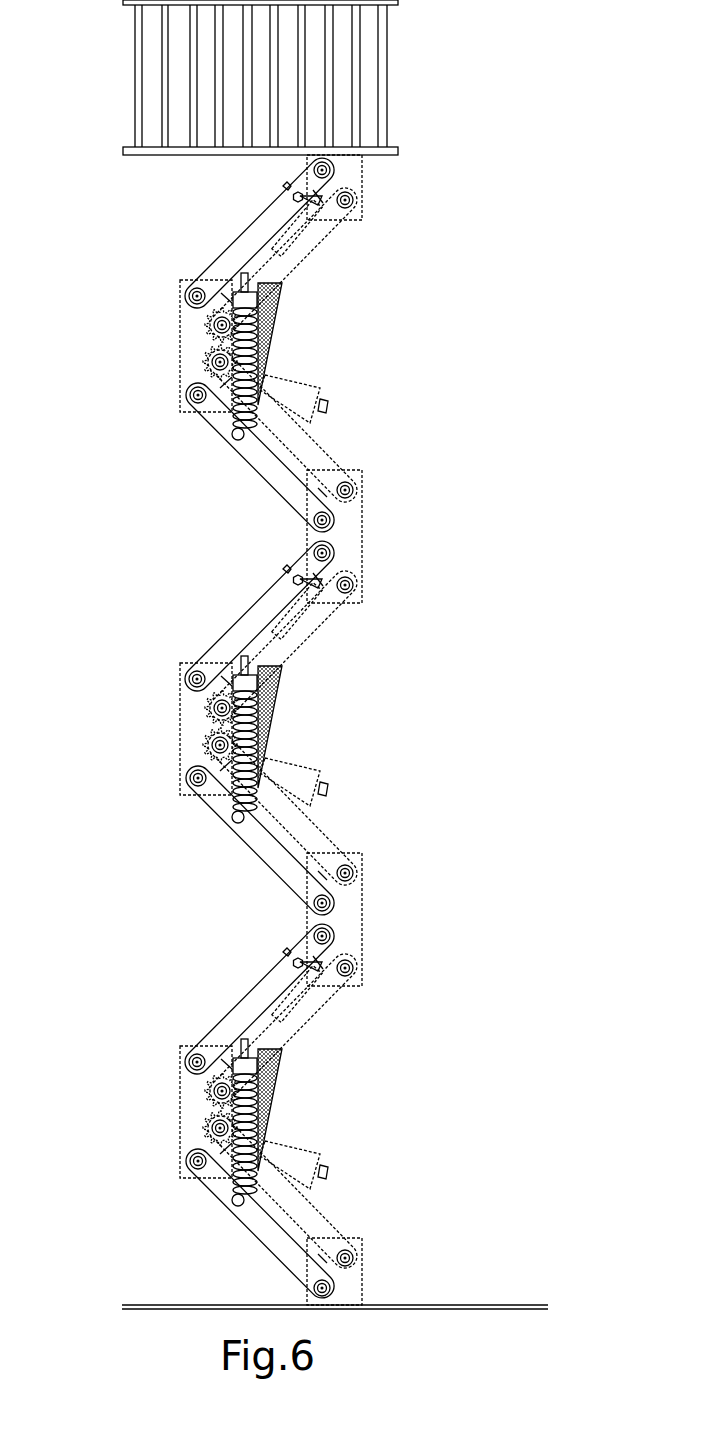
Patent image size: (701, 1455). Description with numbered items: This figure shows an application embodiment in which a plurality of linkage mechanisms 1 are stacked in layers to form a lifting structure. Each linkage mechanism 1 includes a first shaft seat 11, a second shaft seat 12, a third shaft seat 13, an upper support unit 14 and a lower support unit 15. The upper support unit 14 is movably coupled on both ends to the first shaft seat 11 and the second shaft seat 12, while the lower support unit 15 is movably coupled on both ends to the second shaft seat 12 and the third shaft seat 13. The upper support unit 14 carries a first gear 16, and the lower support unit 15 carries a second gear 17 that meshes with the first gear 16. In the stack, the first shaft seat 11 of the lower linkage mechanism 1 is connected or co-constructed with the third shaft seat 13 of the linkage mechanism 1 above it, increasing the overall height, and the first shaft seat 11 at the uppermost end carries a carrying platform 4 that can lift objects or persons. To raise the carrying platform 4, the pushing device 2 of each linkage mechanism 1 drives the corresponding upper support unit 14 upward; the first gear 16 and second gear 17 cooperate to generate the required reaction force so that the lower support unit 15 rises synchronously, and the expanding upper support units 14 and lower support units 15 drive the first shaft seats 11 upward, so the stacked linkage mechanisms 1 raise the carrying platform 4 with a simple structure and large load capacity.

The linkage mechanism 1 is at (473, 349).
The pushing device 2 is at (285, 337).
The carrying platform 4 is at (392, 77).
The first shaft seat 11 is at (363, 186).
The second shaft seat 12 is at (180, 292).
The third shaft seat 13 is at (363, 1287).
The upper support unit 14 is at (248, 222).
The lower support unit 15 is at (205, 415).
The first gear 16 is at (208, 332).
The second gear 17 is at (205, 357).